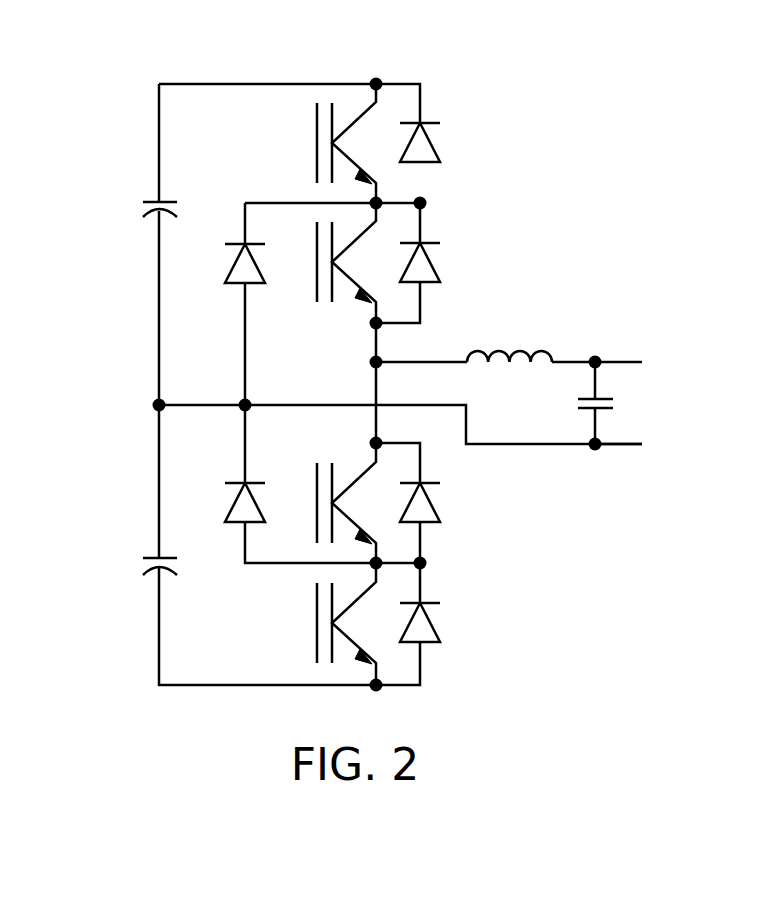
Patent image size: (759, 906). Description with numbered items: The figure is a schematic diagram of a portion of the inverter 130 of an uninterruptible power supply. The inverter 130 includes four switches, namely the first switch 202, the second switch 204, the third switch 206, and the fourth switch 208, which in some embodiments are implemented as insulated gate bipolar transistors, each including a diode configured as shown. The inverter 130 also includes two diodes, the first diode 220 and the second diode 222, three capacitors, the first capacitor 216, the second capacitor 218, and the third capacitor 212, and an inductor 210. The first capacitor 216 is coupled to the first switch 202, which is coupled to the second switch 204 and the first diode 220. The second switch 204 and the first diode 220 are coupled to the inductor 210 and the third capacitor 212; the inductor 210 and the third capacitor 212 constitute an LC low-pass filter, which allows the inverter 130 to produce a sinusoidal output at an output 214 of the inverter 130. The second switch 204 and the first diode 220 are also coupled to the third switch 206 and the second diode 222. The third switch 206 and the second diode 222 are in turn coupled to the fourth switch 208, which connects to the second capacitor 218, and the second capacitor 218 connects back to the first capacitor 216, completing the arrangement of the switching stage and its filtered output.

The inverter 130 is at (608, 122).
The switch S1 202 is at (425, 122).
The switch S2 204 is at (425, 242).
The switch S3 206 is at (438, 515).
The switch S4 208 is at (438, 635).
The inductor 210 is at (520, 352).
The capacitor C3 212 is at (617, 402).
The output 214 is at (615, 446).
The capacitor C1 216 is at (137, 193).
The capacitor C2 218 is at (137, 578).
The diode D1 220 is at (212, 289).
The diode D2 222 is at (217, 483).